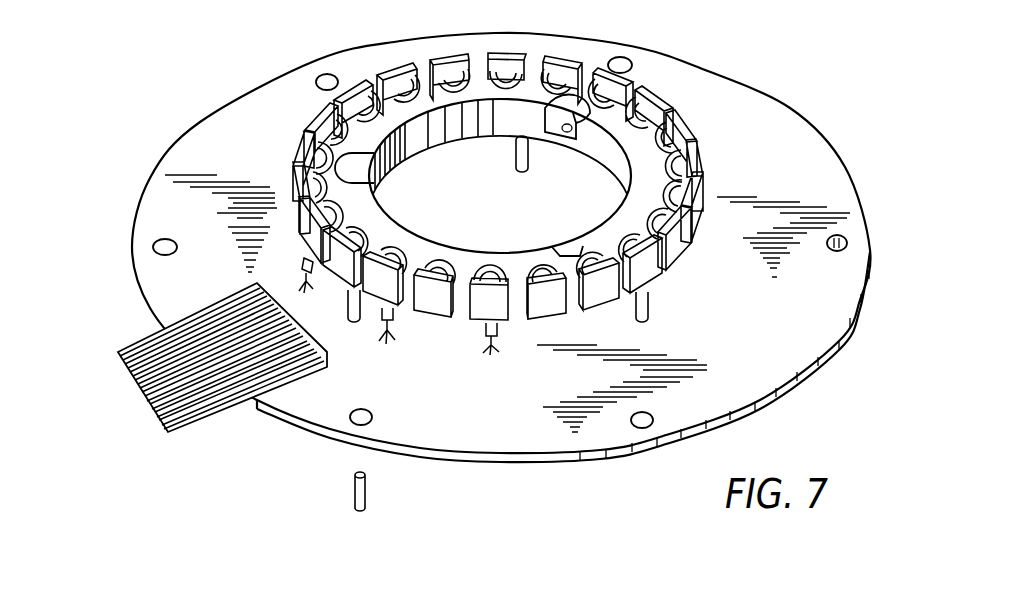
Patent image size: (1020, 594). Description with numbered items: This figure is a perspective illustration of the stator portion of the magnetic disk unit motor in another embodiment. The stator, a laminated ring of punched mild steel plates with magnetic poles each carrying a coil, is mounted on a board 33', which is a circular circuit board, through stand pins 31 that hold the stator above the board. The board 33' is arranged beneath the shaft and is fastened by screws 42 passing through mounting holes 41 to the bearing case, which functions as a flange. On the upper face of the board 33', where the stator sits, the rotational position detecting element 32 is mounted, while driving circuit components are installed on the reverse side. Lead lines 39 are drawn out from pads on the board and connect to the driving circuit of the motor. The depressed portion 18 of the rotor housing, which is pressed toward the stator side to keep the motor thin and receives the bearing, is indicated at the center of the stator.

The depressed portion 18 is at (642, 162).
The stand pins 31 is at (646, 310).
The rotational position detecting element 32 is at (489, 334).
The board 33' is at (534, 247).
The lead lines 39 is at (140, 386).
The mounting holes 41 is at (378, 419).
The screws 42 is at (356, 490).